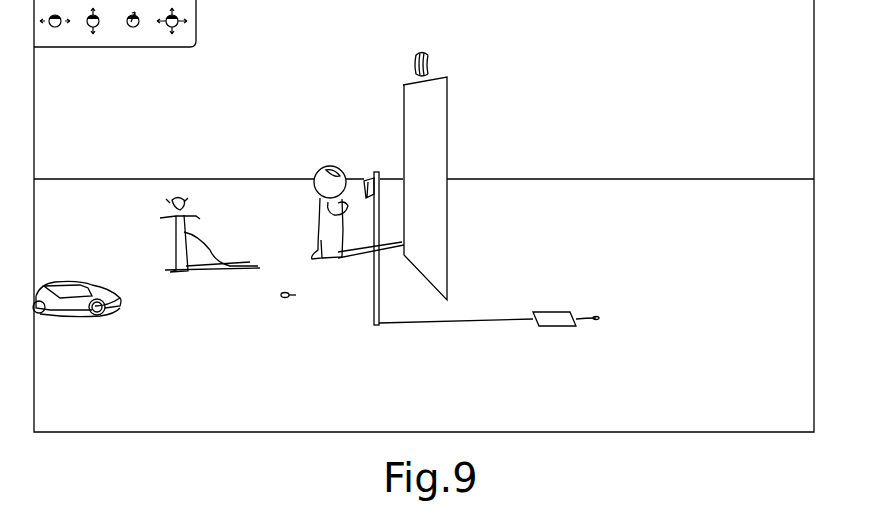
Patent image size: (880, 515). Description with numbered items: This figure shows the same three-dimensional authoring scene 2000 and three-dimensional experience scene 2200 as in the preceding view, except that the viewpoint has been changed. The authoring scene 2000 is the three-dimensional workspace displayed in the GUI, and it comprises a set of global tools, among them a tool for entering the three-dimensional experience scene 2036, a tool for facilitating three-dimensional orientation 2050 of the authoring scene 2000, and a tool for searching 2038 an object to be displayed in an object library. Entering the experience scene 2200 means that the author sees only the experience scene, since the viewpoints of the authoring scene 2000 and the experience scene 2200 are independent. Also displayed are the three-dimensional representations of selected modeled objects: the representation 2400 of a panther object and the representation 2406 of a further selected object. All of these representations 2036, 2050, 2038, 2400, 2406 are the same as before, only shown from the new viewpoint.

The 3D authoring scene 2000 is at (798, 418).
The 3D experience scene 2200 is at (420, 122).
The entering the 3D experience scene tool 2036 is at (432, 62).
The 3D orientation tool 2050 is at (318, 167).
The searching tool 2038 is at (372, 297).
The representation of the object 2400 is at (170, 228).
The representation of the object 2406 is at (120, 299).